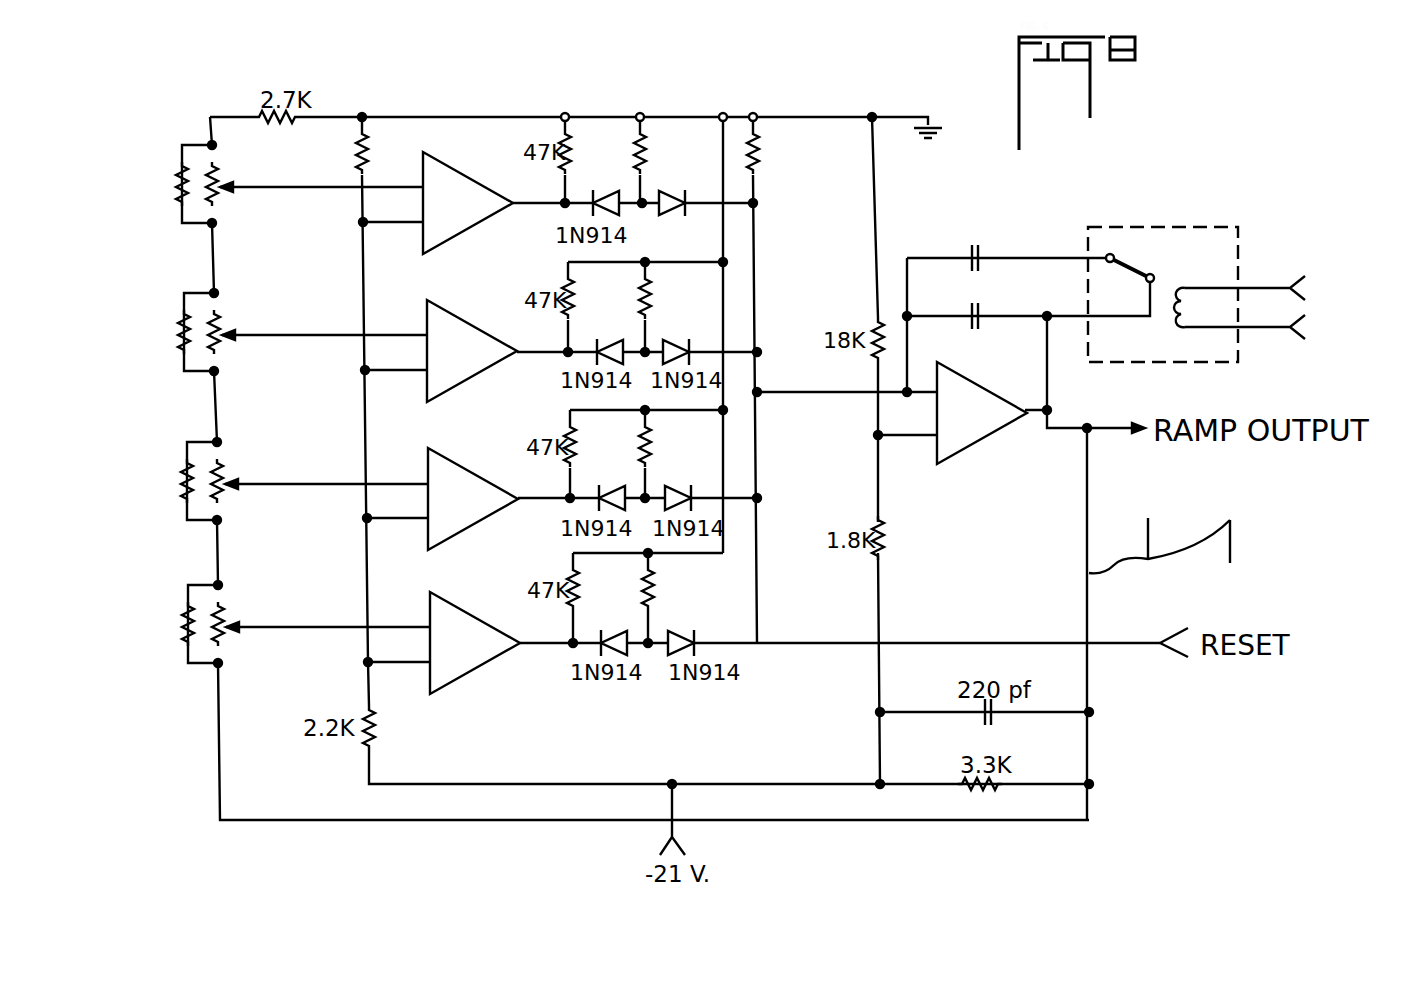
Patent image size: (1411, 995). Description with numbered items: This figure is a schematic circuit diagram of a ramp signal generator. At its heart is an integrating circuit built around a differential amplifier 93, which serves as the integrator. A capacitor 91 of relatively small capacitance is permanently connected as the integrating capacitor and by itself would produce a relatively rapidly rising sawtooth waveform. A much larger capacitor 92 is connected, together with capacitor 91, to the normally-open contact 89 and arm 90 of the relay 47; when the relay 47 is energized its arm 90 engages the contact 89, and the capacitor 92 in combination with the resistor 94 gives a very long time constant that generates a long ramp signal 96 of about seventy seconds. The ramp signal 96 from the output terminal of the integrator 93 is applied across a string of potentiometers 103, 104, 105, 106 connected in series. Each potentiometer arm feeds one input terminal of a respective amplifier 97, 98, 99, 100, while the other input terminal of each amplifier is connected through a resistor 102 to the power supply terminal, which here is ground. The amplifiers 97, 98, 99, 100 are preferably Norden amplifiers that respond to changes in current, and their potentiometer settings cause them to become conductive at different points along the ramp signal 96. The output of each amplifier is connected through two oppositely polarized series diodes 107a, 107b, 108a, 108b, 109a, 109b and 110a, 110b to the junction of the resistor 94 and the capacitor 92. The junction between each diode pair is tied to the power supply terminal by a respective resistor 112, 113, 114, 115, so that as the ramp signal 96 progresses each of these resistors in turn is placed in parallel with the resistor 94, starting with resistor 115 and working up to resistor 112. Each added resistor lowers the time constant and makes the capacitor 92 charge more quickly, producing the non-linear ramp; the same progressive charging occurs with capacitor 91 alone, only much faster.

The relay 47 is at (1138, 228).
The normally-open contact 89 is at (1145, 285).
The arm 90 is at (1148, 268).
The capacitor 91 is at (982, 312).
The capacitor 92 is at (980, 254).
The differential amplifier 93 is at (942, 452).
The resistor 94 is at (760, 170).
The ramp signal 96 is at (1148, 530).
The amplifier 97 is at (438, 162).
The amplifier 98 is at (464, 326).
The amplifier 99 is at (449, 458).
The amplifier 100 is at (452, 610).
The resistor 102 is at (356, 158).
The potentiometer 103 is at (218, 178).
The potentiometer 104 is at (219, 326).
The potentiometer 105 is at (221, 474).
The potentiometer 106 is at (226, 616).
The diode 107a is at (593, 192).
The diode 107b is at (692, 222).
The diode 108a is at (598, 342).
The diode 108b is at (698, 329).
The diode 109a is at (600, 488).
The diode 109b is at (700, 475).
The diode 110a is at (602, 633).
The diode 110b is at (703, 620).
The resistor 112 is at (634, 146).
The resistor 113 is at (640, 298).
The resistor 114 is at (643, 446).
The resistor 115 is at (646, 590).